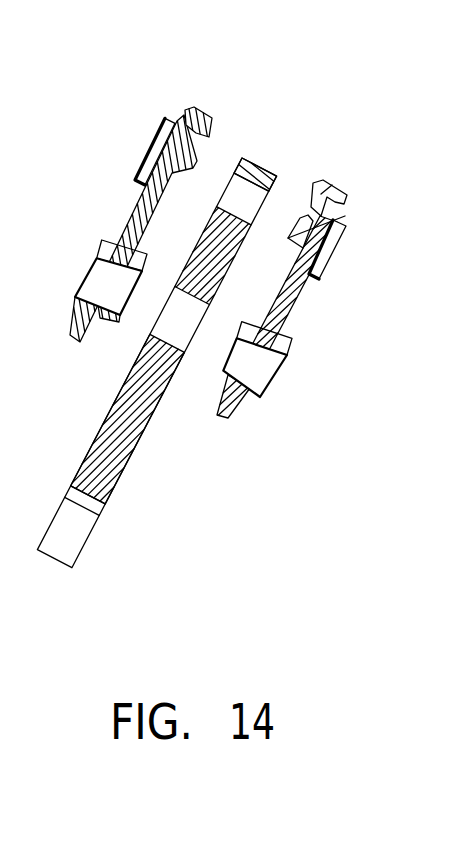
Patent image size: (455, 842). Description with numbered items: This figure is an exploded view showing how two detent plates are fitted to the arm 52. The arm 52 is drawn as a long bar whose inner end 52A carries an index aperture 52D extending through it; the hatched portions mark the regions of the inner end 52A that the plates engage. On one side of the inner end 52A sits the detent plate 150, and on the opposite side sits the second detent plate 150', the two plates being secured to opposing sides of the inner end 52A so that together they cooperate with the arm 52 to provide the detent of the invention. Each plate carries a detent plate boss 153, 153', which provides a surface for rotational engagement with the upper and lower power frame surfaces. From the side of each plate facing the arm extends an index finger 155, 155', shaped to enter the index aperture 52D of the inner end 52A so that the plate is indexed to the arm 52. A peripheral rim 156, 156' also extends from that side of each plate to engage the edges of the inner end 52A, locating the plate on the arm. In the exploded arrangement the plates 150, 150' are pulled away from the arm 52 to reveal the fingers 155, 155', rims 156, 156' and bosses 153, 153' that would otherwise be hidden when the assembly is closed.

The second arm 52 is at (95, 507).
The inner end 52A is at (158, 345).
The index aperture 52D is at (268, 173).
The detent plate 150 is at (123, 194).
The detent plate boss 153 is at (103, 312).
The index finger 155 is at (159, 124).
The peripheral rim 156 is at (209, 91).
The detent plate 150' is at (320, 283).
The detent plate boss 153' is at (232, 389).
The index finger 155' is at (372, 233).
The peripheral rim 156' is at (367, 179).